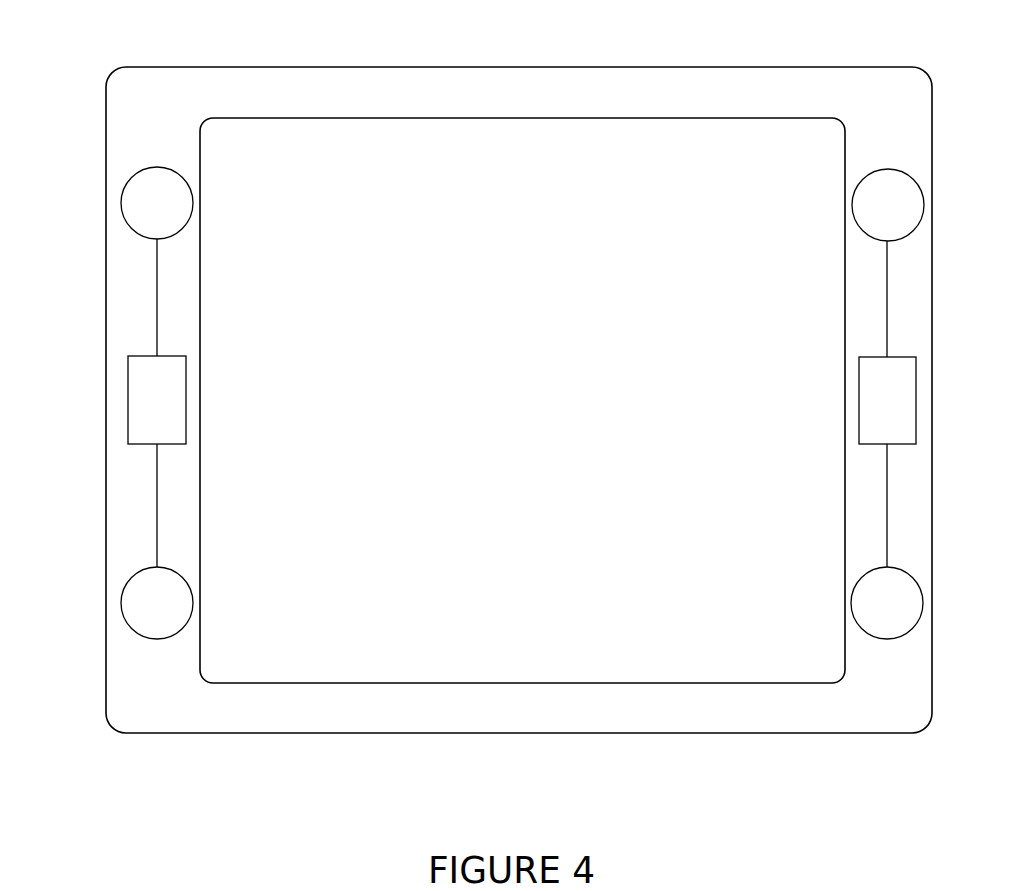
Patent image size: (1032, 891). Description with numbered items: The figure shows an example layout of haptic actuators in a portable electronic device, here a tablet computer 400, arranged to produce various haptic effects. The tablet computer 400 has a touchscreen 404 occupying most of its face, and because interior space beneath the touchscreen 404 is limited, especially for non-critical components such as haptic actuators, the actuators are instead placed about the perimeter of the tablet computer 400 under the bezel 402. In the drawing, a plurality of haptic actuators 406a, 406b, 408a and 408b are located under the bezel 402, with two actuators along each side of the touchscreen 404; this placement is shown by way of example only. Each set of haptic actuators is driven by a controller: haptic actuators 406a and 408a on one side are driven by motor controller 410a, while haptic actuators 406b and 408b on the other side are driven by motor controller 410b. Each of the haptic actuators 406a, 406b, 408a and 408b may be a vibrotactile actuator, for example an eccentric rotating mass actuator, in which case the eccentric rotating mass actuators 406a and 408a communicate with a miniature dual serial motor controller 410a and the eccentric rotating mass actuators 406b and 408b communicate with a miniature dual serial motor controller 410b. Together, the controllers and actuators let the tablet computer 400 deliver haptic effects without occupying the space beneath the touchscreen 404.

The tablet computer 400 is at (130, 66).
The bezel 402 is at (471, 88).
The touchscreen 404 is at (385, 251).
The haptic actuator 406a is at (135, 219).
The haptic actuator 406b is at (877, 220).
The haptic actuator 408a is at (137, 602).
The haptic actuator 408b is at (883, 619).
The motor controller 410a is at (143, 421).
The motor controller 410b is at (890, 423).